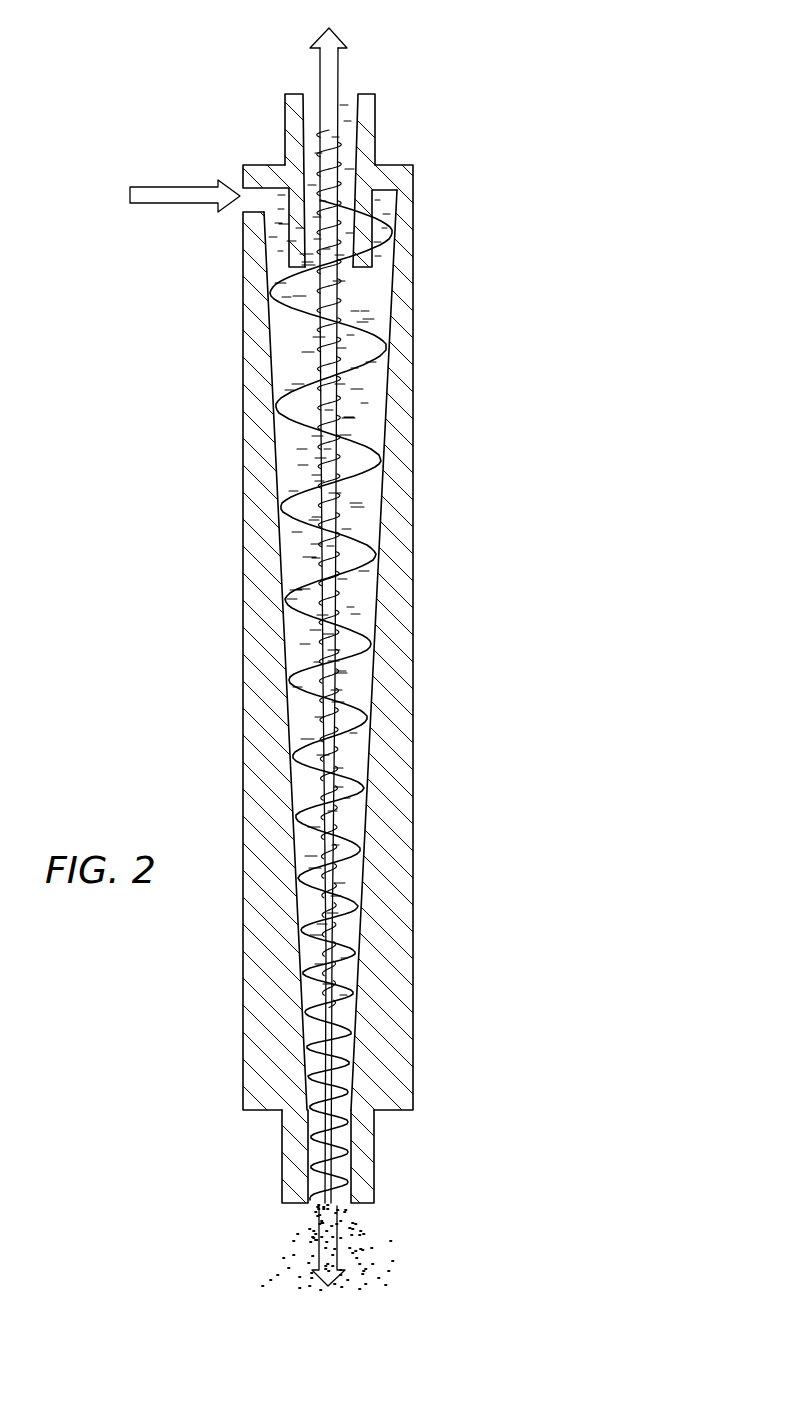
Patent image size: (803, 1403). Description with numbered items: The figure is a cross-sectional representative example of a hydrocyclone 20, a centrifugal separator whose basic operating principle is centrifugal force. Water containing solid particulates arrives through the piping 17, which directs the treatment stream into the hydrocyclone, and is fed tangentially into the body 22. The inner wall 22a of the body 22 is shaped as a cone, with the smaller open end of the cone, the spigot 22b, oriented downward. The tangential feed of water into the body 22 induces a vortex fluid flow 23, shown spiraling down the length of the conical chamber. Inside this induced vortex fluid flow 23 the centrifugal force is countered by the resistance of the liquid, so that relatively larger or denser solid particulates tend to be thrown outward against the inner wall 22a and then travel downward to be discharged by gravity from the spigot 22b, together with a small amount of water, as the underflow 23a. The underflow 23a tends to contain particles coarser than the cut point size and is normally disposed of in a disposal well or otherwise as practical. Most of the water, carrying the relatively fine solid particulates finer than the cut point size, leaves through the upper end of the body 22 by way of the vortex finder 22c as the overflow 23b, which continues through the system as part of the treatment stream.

The piping 17 is at (153, 187).
The hydrocyclone 20 is at (492, 136).
The body 22 is at (414, 285).
The inner wall 22a is at (390, 398).
The spigot 22b is at (343, 1167).
The vortex finder 22c is at (373, 118).
The vortex fluid flow 23 is at (353, 543).
The underflow 23a is at (295, 1252).
The overflow 23b is at (350, 42).